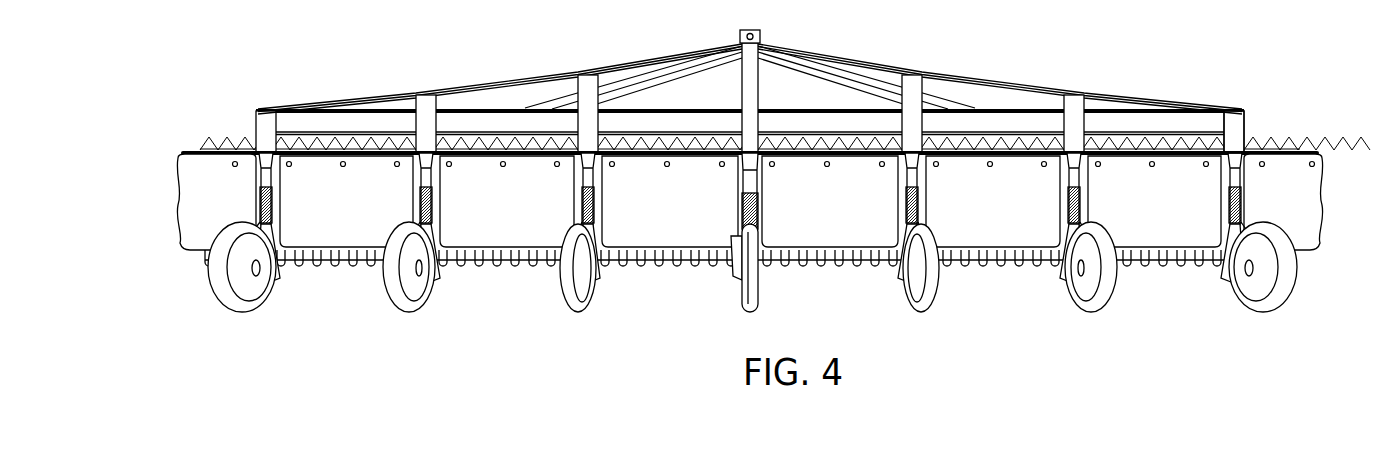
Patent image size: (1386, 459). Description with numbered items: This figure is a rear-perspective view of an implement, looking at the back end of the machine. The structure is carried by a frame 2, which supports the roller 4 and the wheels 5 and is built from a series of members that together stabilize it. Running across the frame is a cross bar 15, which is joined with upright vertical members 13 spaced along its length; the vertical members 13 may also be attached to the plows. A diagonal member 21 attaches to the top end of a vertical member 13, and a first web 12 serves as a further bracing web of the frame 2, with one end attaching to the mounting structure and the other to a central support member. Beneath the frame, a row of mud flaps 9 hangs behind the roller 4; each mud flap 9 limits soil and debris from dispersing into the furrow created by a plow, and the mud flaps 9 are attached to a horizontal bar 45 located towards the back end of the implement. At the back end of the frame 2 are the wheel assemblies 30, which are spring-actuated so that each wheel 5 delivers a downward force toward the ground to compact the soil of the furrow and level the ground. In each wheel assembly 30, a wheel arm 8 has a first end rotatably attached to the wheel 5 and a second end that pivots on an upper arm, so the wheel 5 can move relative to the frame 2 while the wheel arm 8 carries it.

The frame 2 is at (765, 181).
The roller 4 is at (985, 289).
The wheel 5 is at (226, 309).
The wheel arm 8 is at (263, 212).
The mud flap 9 is at (182, 210).
The first web 12 is at (683, 70).
The vertical member 13 is at (437, 99).
The cross bar 15 is at (314, 117).
The diagonal member 21 is at (639, 60).
The wheel assembly 30 is at (766, 211).
The horizontal bar 45 is at (1252, 126).